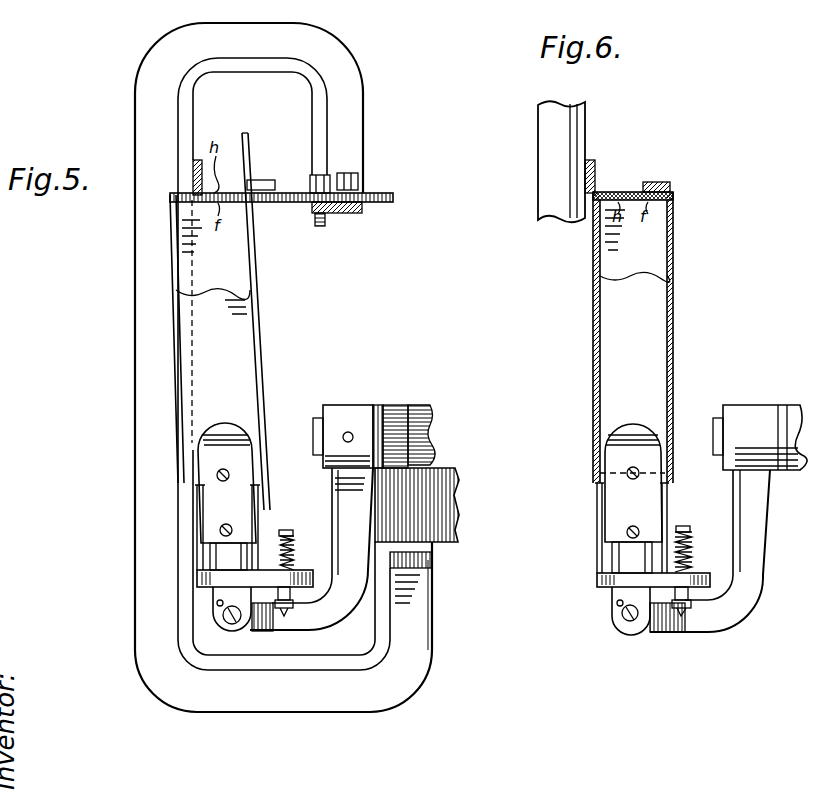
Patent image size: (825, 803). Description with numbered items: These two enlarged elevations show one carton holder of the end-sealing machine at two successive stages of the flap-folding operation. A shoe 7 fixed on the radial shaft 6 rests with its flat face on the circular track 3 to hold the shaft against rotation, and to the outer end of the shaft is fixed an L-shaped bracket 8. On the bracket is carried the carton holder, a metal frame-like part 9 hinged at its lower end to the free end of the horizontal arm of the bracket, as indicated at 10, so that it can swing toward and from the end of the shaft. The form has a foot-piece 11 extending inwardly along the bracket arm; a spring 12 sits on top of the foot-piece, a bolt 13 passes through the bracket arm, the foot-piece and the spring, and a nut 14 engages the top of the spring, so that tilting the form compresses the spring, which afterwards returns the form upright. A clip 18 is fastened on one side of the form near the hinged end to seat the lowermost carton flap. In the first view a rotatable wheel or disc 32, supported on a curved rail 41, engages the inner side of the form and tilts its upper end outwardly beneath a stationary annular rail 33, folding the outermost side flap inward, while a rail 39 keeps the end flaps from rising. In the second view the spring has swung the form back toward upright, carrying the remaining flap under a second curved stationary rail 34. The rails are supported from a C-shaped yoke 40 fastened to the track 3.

In FIG. 5, the circular track 3 is at (452, 470).
In FIG. 5, the head block 6 is at (313, 423).
In FIG. 6, the head block 6 is at (715, 423).
In FIG. 5, the shoe 7 is at (398, 407).
In FIG. 5, the L-shaped bracket 8 is at (330, 490).
In FIG. 5, the frame-like part 9 is at (248, 147).
In FIG. 6, the frame-like part 9 is at (622, 192).
In FIG. 5, the hinge 10 is at (224, 620).
In FIG. 6, the hinge 10 is at (628, 617).
In FIG. 5, the foot-piece 11 is at (305, 566).
In FIG. 6, the foot-piece 11 is at (712, 580).
In FIG. 5, the spring 12 is at (290, 550).
In FIG. 6, the spring 12 is at (690, 560).
In FIG. 5, the bolt 13 is at (283, 617).
In FIG. 6, the bolt 13 is at (690, 632).
In FIG. 5, the nut 14 is at (287, 531).
In FIG. 6, the nut 14 is at (686, 526).
In FIG. 5, the clip 18 is at (208, 458).
In FIG. 6, the clip 18 is at (615, 493).
In FIG. 5, the deflecting wheel or disc 32 is at (383, 193).
In FIG. 5, the stationary annular rail 33 is at (192, 178).
In FIG. 6, the stationary annular rail 33 is at (597, 160).
In FIG. 6, the second curved stationary rail 34 is at (658, 182).
In FIG. 5, the rail 39 is at (262, 180).
In FIG. 5, the C-shaped yoke 40 is at (412, 650).
In FIG. 6, the C-shaped yoke 40 is at (545, 176).
In FIG. 5, the curved rail 41 is at (192, 330).
In FIG. 6, the curved rail 41 is at (665, 302).